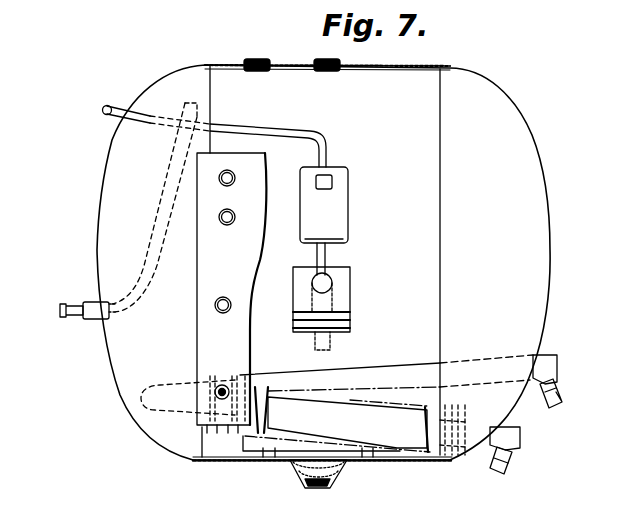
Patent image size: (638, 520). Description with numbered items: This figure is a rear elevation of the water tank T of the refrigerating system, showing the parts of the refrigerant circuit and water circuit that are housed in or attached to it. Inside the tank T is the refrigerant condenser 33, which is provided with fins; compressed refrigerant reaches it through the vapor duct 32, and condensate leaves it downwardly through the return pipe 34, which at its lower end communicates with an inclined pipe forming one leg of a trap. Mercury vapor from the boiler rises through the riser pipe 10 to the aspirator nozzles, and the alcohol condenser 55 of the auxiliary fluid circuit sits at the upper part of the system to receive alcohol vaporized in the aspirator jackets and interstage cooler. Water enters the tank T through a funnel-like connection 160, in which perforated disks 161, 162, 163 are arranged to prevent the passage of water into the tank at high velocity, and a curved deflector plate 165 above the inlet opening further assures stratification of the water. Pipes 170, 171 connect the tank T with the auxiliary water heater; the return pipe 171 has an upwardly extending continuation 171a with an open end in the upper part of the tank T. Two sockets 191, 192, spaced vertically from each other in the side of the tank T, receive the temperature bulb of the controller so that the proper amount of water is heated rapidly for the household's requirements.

The tank T is at (531, 128).
The riser pipe 10 is at (302, 412).
The vapor duct 32 is at (556, 401).
The refrigerant condenser 33 is at (358, 386).
The return pipe 34 is at (508, 470).
The alcohol condenser 55 is at (352, 286).
The funnel-like connection 160 is at (297, 472).
The perforated disk 161 is at (302, 485).
The perforated disk 162 is at (337, 478).
The perforated disk 163 is at (347, 468).
The curved deflector plate 165 is at (247, 446).
The pipe 170 is at (80, 306).
The return pipe 171 is at (92, 319).
The upwardly extending continuation 171a is at (167, 184).
The socket 191 is at (231, 176).
The socket 192 is at (232, 214).